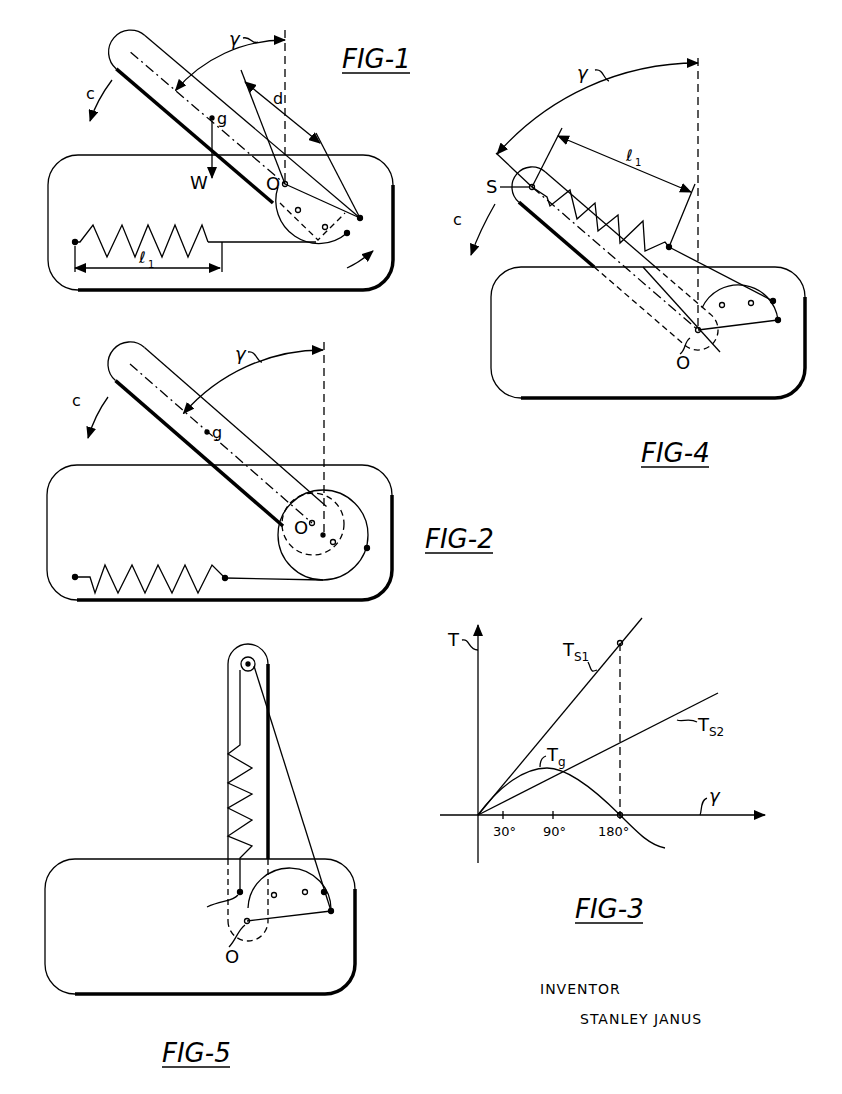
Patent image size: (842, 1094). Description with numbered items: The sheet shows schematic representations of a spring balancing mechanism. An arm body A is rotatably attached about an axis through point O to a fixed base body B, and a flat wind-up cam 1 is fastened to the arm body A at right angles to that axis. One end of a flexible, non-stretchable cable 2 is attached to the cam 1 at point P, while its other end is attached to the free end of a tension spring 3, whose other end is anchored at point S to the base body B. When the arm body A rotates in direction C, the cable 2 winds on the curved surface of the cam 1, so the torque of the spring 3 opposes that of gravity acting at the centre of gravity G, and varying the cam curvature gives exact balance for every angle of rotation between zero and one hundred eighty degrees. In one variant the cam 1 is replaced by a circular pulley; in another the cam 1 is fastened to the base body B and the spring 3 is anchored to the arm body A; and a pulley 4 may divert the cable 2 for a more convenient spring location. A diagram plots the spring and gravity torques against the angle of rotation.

In FIG. 1, the wind-up cam 1 is at (333, 246).
In FIG. 2, the wind-up cam 1 is at (347, 508).
In FIG. 4, the wind-up cam 1 is at (743, 318).
In FIG. 5, the wind-up cam 1 is at (297, 911).
In FIG. 1, the cable 2 is at (268, 243).
In FIG. 2, the cable 2 is at (268, 579).
In FIG. 4, the cable 2 is at (713, 267).
In FIG. 5, the cable 2 is at (297, 790).
In FIG. 1, the tension spring 3 is at (180, 233).
In FIG. 2, the tension spring 3 is at (155, 570).
In FIG. 4, the tension spring 3 is at (596, 205).
In FIG. 5, the tension spring 3 is at (226, 801).
In FIG. 5, the pulley 4 is at (242, 663).
In FIG. 1, the arm body A is at (150, 53).
In FIG. 2, the arm body A is at (150, 367).
In FIG. 4, the arm body A is at (540, 210).
In FIG. 5, the arm body A is at (232, 700).
In FIG. 1, the base body B is at (157, 203).
In FIG. 2, the base body B is at (112, 504).
In FIG. 4, the base body B is at (561, 313).
In FIG. 5, the base body B is at (110, 905).